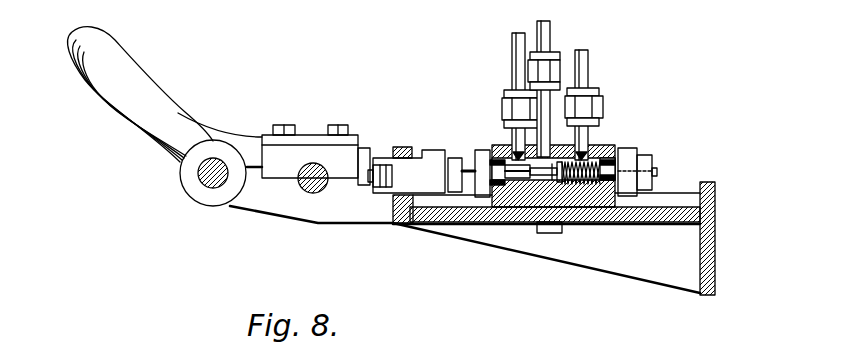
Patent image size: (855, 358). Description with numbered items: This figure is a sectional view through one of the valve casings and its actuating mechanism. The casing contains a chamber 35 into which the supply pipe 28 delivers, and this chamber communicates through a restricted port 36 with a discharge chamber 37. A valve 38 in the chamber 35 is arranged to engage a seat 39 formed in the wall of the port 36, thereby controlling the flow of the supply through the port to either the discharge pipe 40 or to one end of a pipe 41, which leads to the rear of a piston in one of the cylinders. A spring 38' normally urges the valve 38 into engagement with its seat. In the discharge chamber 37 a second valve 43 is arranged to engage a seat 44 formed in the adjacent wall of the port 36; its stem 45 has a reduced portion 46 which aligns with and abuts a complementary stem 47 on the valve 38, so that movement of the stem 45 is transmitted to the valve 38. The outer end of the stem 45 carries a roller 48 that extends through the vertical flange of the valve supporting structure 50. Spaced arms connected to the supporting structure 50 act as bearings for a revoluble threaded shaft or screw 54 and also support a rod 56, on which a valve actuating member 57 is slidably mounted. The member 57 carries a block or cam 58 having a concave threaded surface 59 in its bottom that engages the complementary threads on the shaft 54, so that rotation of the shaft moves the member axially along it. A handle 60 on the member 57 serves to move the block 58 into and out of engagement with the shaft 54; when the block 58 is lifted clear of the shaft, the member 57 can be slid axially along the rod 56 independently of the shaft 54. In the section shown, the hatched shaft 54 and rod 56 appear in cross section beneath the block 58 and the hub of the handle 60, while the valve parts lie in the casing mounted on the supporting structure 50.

The handle 60 is at (106, 57).
The rod 56 is at (201, 181).
The valve actuating member 57 is at (252, 145).
The block or cam 58 is at (288, 153).
The concave threaded surface 59 is at (316, 163).
The threaded shaft or screw 54 is at (301, 187).
The roller 48 is at (375, 181).
The stem 45 is at (468, 160).
The discharge chamber 37 is at (522, 197).
The valve 43 is at (490, 147).
The discharge pipe 40 is at (512, 77).
The pipe 41 is at (545, 33).
The supply pipe 28 is at (590, 72).
The restricted port 36 is at (590, 113).
The spring 38' is at (623, 148).
The chamber 35 is at (605, 200).
The valve 38 is at (578, 205).
The seat 44 is at (530, 197).
The reduced portion 46 is at (540, 197).
The complementary stem 47 is at (548, 197).
The seat 39 is at (558, 197).
The valve supporting structure 50 is at (717, 230).